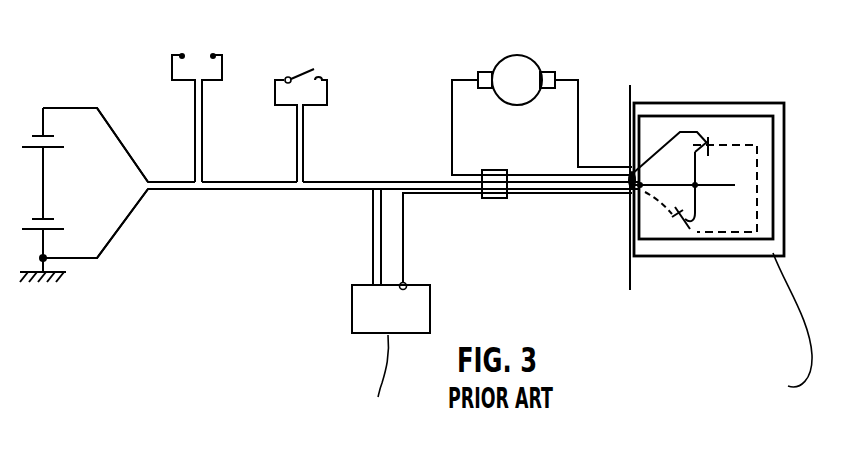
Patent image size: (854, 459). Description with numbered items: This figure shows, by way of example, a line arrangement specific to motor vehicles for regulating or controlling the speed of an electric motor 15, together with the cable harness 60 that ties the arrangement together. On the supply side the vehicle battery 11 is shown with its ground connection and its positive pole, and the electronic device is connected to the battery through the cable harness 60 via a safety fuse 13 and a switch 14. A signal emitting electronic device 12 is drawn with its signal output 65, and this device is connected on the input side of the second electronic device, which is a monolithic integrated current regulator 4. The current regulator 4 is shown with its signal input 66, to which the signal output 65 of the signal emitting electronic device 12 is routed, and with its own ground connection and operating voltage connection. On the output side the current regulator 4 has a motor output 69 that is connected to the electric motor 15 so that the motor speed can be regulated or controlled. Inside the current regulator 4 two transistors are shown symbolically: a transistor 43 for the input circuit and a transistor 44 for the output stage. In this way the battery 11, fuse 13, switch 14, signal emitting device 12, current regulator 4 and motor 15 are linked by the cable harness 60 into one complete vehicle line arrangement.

The monolithic integrated current regulator 4 is at (750, 176).
The vehicle battery 11 is at (57, 192).
The signal emitting electronic device 12 is at (398, 323).
The safety fuse 13 is at (208, 58).
The switch 14 is at (302, 68).
The electric motor 15 is at (517, 66).
The transistor for the input circuit 43 is at (690, 222).
The transistor for the output stage 44 is at (707, 135).
The cable harness 60 is at (498, 200).
The signal output 65 is at (408, 283).
The signal input 66 is at (630, 204).
The motor output 69 is at (630, 172).